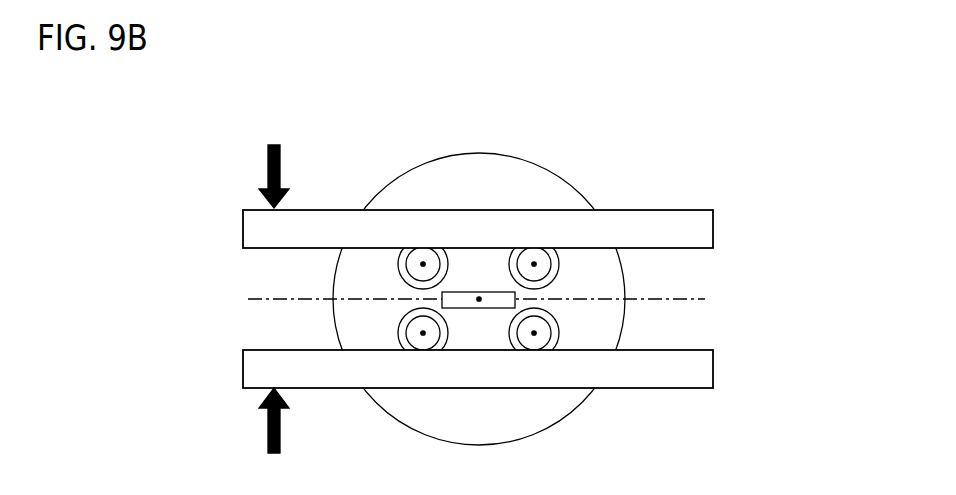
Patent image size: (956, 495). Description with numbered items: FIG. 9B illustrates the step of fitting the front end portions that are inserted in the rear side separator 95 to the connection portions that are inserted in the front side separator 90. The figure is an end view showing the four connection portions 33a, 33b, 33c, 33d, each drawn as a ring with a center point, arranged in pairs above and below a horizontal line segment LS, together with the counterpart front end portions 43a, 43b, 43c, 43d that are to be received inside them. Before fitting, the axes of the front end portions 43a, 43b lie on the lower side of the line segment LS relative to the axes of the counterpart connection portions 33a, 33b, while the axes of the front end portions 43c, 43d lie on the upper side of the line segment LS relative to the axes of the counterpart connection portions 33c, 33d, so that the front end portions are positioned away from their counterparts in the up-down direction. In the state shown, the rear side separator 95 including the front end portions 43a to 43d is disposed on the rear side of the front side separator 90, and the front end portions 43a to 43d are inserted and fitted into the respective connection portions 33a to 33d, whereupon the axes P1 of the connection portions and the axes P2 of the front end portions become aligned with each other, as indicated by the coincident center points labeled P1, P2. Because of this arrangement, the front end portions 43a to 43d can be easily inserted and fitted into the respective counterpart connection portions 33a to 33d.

The rear side separator 95 is at (473, 153).
The front side separator 90 is at (479, 262).
The connection portion 33a is at (563, 337).
The connection portion 33b is at (398, 342).
The connection portion 33c is at (396, 257).
The connection portion 33d is at (563, 259).
The front end portion 43a is at (552, 315).
The front end portion 43b is at (402, 313).
The front end portion 43c is at (403, 285).
The front end portion 43d is at (552, 284).
The axis of the first connection portion P1 is at (479, 302).
The axis of the second connection portion P2 is at (423, 264).
The line segment LS is at (492, 302).